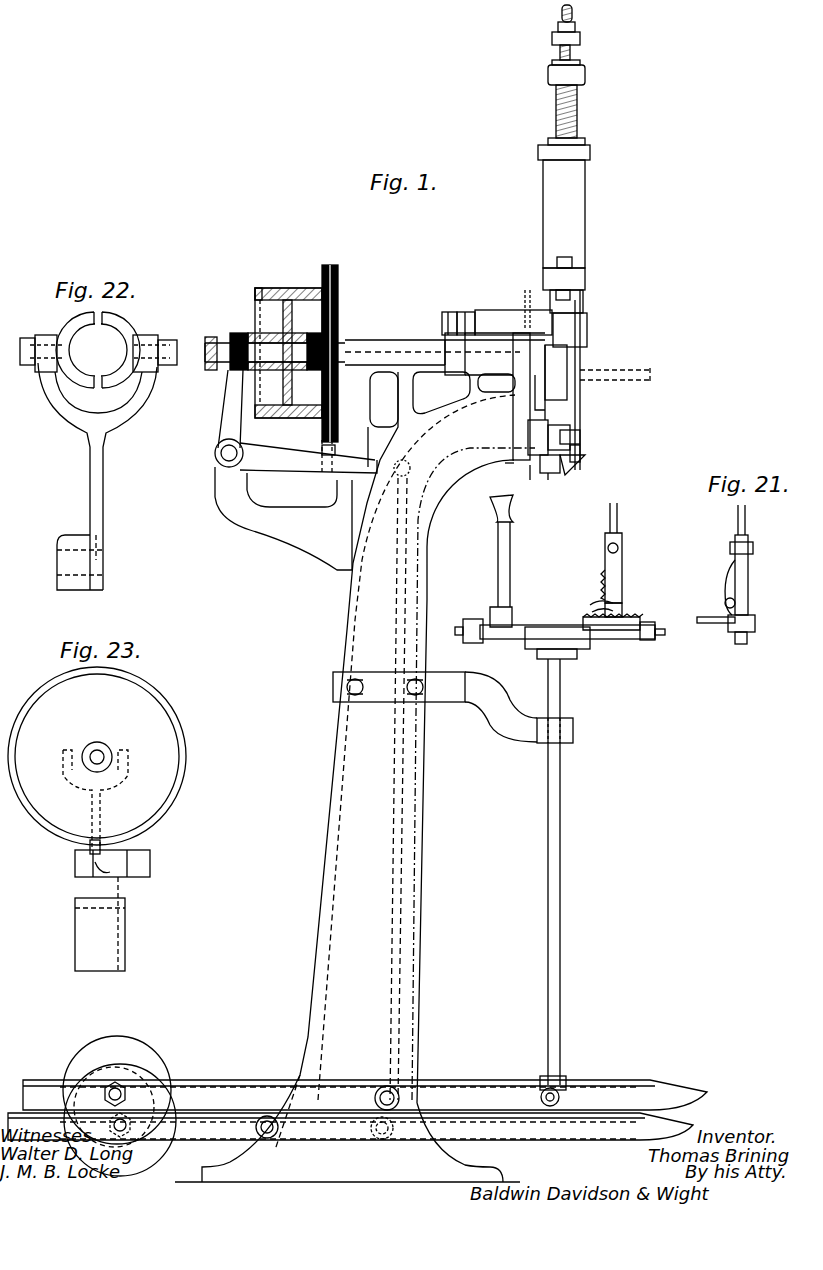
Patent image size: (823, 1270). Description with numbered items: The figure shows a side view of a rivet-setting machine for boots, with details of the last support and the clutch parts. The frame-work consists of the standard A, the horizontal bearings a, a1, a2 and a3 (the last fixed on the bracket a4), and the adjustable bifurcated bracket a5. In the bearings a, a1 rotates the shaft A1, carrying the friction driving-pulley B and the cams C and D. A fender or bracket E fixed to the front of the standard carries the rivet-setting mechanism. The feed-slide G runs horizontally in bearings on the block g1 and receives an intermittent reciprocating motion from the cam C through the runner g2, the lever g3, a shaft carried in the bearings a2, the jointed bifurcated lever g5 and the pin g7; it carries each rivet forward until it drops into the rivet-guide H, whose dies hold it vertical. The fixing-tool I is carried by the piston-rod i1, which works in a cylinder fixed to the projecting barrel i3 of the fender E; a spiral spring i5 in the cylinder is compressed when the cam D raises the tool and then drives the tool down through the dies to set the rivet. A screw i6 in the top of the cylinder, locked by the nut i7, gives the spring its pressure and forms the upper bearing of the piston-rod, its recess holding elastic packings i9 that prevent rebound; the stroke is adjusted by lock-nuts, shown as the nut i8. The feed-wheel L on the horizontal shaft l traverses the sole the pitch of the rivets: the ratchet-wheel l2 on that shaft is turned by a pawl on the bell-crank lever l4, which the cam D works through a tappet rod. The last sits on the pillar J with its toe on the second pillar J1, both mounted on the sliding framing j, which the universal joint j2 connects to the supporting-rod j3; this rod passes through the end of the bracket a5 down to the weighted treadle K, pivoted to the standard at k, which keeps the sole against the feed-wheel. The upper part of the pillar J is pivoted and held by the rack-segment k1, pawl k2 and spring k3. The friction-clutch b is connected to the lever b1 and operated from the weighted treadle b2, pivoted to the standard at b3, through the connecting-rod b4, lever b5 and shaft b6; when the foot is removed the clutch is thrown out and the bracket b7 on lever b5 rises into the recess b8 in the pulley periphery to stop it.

In FIG. 1, the standard A is at (350, 761).
In FIG. 23, the standard A is at (104, 757).
In FIG. 1, the shaft A1 is at (215, 352).
In FIG. 1, the friction driving-pulley B is at (330, 272).
In FIG. 23, the friction driving-pulley B is at (97, 756).
In FIG. 1, the friction-clutch b is at (262, 310).
In FIG. 22, the friction-clutch b is at (128, 322).
In FIG. 23, the friction-clutch b is at (90, 750).
In FIG. 1, the lever b1 is at (230, 420).
In FIG. 22, the lever b1 is at (103, 506).
In FIG. 23, the lever b1 is at (103, 812).
In FIG. 1, the weighted treadle b2 is at (195, 1125).
In FIG. 1, the pivot of treadle b3 is at (268, 1114).
In FIG. 1, the connecting-rod b4 is at (395, 940).
In FIG. 1, the lever b5 is at (297, 468).
In FIG. 23, the lever b5 is at (150, 857).
In FIG. 1, the shaft b6 is at (215, 456).
In FIG. 1, the bracket b7 is at (340, 470).
In FIG. 23, the bracket b7 is at (95, 870).
In FIG. 1, the recess b8 is at (337, 446).
In FIG. 1, the horizontal bearing a is at (385, 350).
In FIG. 1, the horizontal bearing a1 is at (505, 354).
In FIG. 1, the bearings a2 is at (513, 322).
In FIG. 1, the horizontal bearing a3 is at (212, 480).
In FIG. 23, the horizontal bearing a3 is at (88, 860).
In FIG. 1, the bracket a4 is at (302, 540).
In FIG. 23, the bracket a4 is at (100, 924).
In FIG. 1, the adjustable bifurcated bracket a5 is at (485, 728).
In FIG. 1, the cam C is at (455, 354).
In FIG. 1, the cam D is at (530, 396).
In FIG. 1, the fender or bracket E is at (551, 377).
In FIG. 1, the feed-slide G is at (548, 482).
In FIG. 1, the rivet-guide H is at (580, 468).
In FIG. 1, the fixing-tool I is at (570, 418).
In FIG. 1, the feed-wheel L is at (550, 473).
In FIG. 1, the horizontal shaft l is at (532, 472).
In FIG. 1, the ratchet-wheel l2 is at (520, 440).
In FIG. 1, the bell-crank lever l4 is at (515, 468).
In FIG. 1, the block g1 is at (538, 436).
In FIG. 1, the runner g2 is at (470, 312).
In FIG. 1, the lever g3 is at (450, 312).
In FIG. 1, the jointed bifurcated lever g5 is at (588, 326).
In FIG. 1, the pin g7 is at (580, 437).
In FIG. 1, the piston-rod i1 is at (558, 50).
In FIG. 1, the projecting barrel i3 is at (584, 300).
In FIG. 1, the spiral spring i5 is at (564, 217).
In FIG. 1, the screw i6 is at (578, 108).
In FIG. 1, the nut i7 is at (586, 140).
In FIG. 1, the upper nut i8 is at (580, 38).
In FIG. 1, the elastic packings i9 is at (584, 64).
In FIG. 1, the pillar J is at (623, 555).
In FIG. 21, the pillar J is at (749, 566).
In FIG. 1, the second pillar J1 is at (512, 565).
In FIG. 1, the cross bar j is at (490, 640).
In FIG. 21, the cross bar j is at (745, 640).
In FIG. 1, the universal joint j2 is at (545, 658).
In FIG. 1, the supporting-rod j3 is at (562, 790).
In FIG. 1, the weighted treadle K is at (228, 1078).
In FIG. 1, the pivot of treadle k is at (400, 1092).
In FIG. 1, the rack-segment k1 is at (625, 632).
In FIG. 21, the rack-segment k1 is at (725, 628).
In FIG. 1, the pawl k2 is at (625, 612).
In FIG. 21, the pawl k2 is at (724, 603).
In FIG. 1, the spring k3 is at (600, 578).